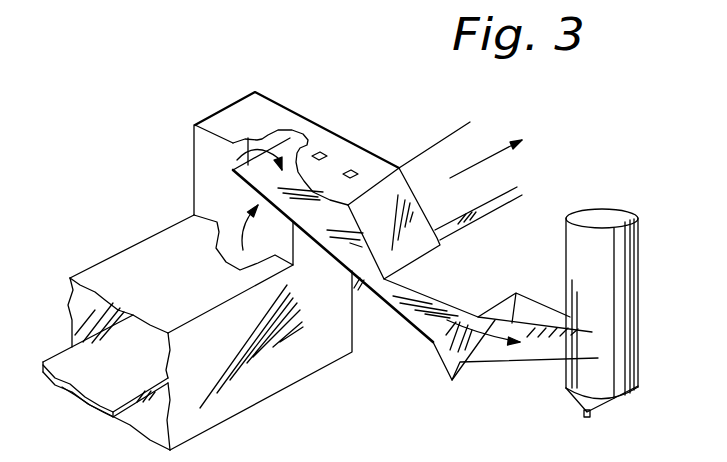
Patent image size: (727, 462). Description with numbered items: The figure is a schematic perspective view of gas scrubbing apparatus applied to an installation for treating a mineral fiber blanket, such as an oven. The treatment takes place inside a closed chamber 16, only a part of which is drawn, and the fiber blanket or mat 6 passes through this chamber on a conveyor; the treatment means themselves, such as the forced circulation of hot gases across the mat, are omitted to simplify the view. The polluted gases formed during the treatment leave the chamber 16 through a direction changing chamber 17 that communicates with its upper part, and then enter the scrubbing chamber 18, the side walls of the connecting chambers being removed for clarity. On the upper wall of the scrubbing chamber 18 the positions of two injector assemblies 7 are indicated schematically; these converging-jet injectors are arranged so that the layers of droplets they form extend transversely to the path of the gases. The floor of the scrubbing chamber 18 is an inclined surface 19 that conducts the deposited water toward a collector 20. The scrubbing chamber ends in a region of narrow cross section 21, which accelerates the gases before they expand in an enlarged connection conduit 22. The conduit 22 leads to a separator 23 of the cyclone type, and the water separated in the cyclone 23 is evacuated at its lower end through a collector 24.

The fiber blanket or mat 6 is at (70, 362).
The injector assemblies 7 is at (357, 168).
The closed chamber 16 is at (137, 258).
The direction changing chamber 17 is at (233, 123).
The scrubbing chamber 18 is at (326, 230).
The inclined surface 19 is at (326, 250).
The collector 20 is at (440, 365).
The region of narrow cross section 21 is at (382, 284).
The enlarged connection conduit 22 is at (533, 343).
The separator 23 is at (622, 303).
The collector 24 is at (592, 413).